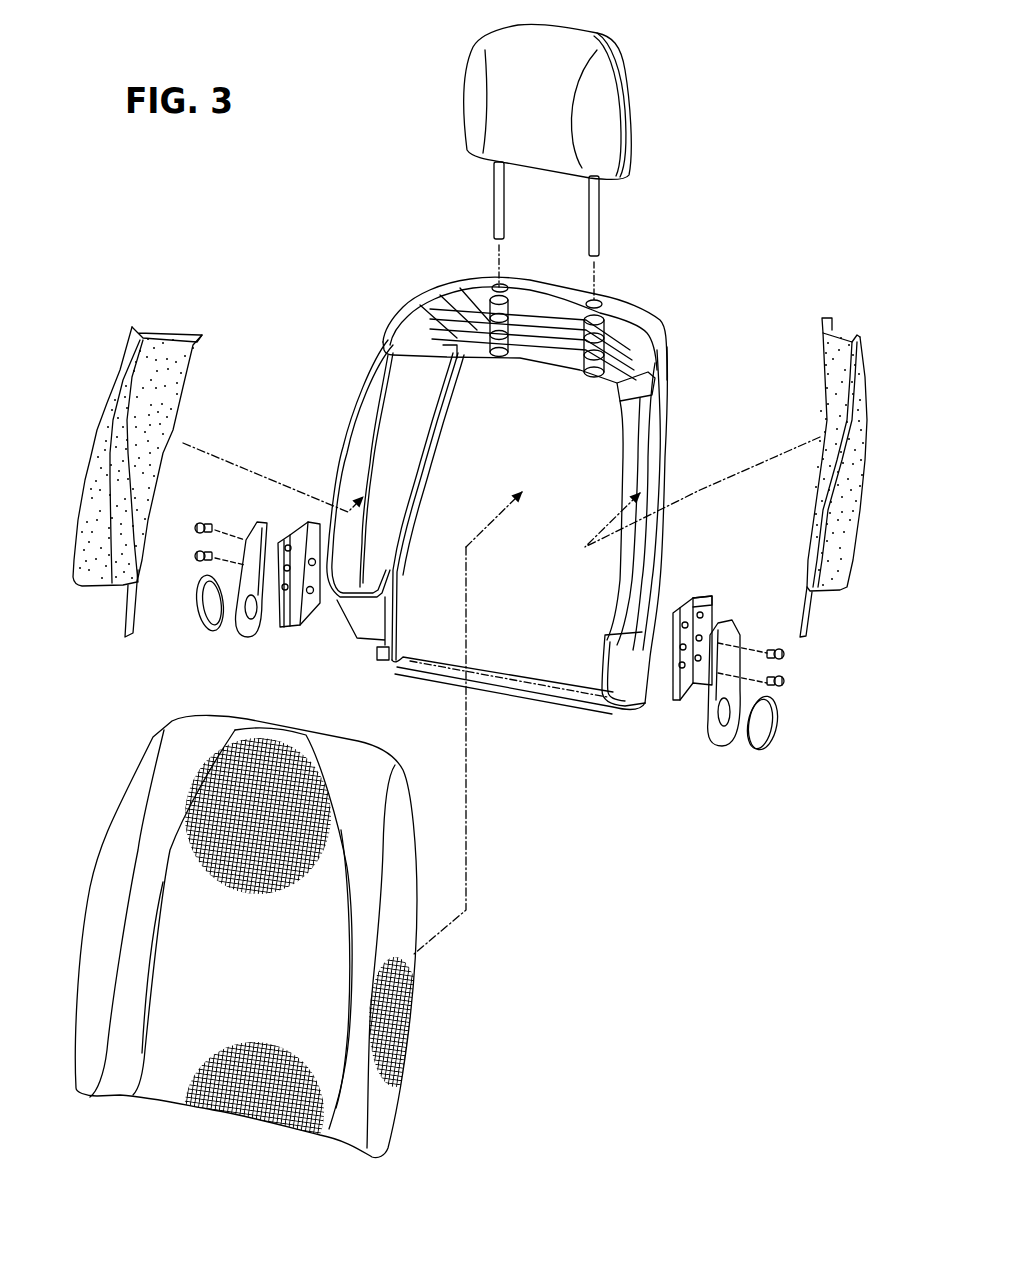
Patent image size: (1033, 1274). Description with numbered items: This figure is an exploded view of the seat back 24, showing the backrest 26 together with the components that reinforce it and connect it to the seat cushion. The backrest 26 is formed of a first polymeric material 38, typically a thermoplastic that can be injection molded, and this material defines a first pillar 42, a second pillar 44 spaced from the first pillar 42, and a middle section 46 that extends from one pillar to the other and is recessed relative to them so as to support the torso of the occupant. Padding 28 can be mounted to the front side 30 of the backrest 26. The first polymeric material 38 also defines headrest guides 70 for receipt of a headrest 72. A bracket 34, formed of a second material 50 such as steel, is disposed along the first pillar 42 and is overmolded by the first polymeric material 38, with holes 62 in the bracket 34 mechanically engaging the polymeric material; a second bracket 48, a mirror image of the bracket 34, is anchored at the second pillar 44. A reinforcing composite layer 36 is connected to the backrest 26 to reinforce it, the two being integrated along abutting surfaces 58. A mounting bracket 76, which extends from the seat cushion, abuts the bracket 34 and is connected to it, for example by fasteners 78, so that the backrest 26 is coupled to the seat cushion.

The seat back 24 is at (606, 913).
The backrest 26 is at (537, 650).
The padding 28 is at (390, 1107).
The front side 30 is at (470, 417).
The bracket 34 is at (673, 700).
The reinforcing composite layer 36 is at (108, 407).
The first polymeric material 38 is at (568, 418).
The first pillar 42 is at (647, 433).
The second pillar 44 is at (357, 438).
The middle section 46 is at (440, 628).
The second bracket 48 is at (293, 627).
The second material 50 is at (700, 598).
The abutting surfaces 58 is at (380, 413).
The holes 62 is at (288, 537).
The headrest guides 70 is at (494, 285).
The headrest 72 is at (520, 78).
The mounting bracket 76 is at (235, 635).
The fasteners 78 is at (192, 529).